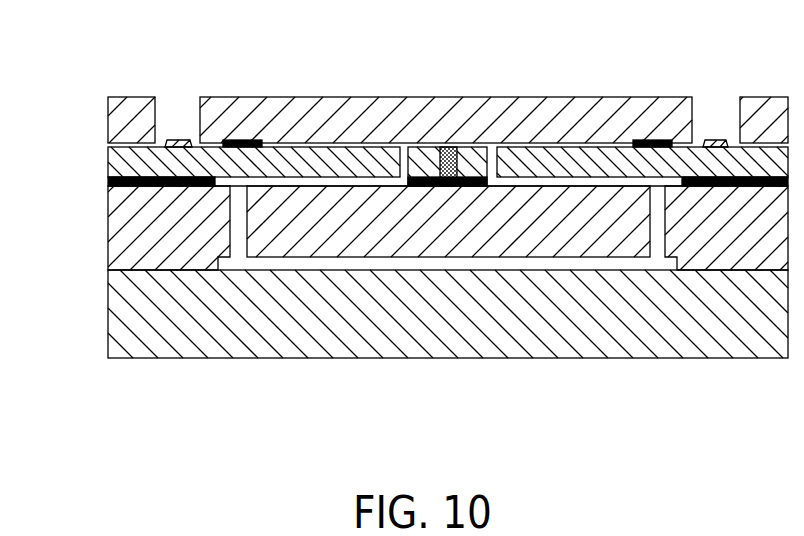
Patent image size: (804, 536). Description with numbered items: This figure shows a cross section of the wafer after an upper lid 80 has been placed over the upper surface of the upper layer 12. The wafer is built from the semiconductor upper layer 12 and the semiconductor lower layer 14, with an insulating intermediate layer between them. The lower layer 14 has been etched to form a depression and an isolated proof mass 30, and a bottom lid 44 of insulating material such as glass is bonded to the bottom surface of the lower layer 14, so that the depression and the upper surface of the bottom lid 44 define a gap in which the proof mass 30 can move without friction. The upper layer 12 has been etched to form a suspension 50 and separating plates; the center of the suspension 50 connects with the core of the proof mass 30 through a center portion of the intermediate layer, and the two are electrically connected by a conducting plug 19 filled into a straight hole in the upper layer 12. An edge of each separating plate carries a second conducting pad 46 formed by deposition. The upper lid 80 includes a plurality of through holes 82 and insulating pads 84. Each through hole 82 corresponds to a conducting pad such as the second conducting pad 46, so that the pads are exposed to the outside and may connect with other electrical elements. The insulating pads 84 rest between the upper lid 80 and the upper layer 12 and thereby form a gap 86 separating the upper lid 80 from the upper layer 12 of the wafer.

The upper lid 80 is at (323, 97).
The through holes 82 is at (167, 105).
The insulating pads 84 is at (248, 141).
The gap 86 is at (372, 147).
The second conducting pad 46 is at (180, 140).
The conducting plug 19 is at (450, 147).
The suspension 50 is at (478, 147).
The upper layer 12 is at (108, 160).
The lower layer 14 is at (108, 240).
The proof mass 30 is at (392, 227).
The bottom lid 44 is at (108, 328).